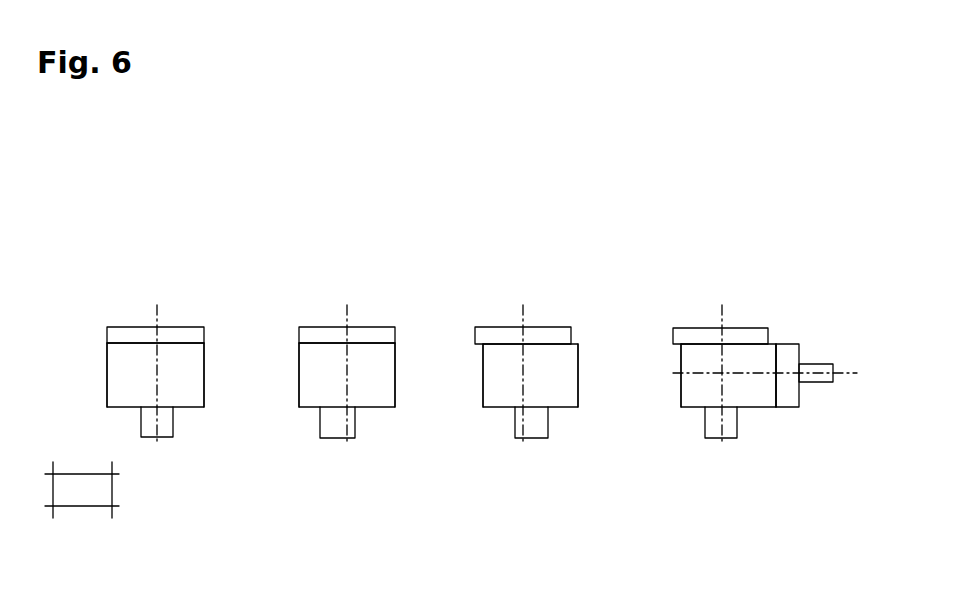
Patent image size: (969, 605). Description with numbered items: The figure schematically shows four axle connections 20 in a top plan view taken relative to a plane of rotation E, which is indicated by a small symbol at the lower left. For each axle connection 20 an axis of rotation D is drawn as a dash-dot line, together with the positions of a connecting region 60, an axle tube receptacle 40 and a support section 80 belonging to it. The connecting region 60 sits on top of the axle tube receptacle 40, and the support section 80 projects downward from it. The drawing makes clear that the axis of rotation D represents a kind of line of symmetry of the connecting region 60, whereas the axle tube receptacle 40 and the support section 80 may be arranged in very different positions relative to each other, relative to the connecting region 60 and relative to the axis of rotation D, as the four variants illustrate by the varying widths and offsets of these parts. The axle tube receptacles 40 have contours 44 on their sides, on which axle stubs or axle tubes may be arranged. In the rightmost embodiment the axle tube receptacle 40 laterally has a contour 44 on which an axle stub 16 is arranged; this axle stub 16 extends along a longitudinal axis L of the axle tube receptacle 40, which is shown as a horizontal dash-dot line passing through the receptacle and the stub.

The axle connection 20 is at (147, 275).
The axle tube receptacle 40 is at (195, 393).
The connecting region 60 is at (132, 337).
The support section 80 is at (165, 427).
The contour 44 is at (107, 362).
The axis of rotation D is at (163, 309).
The axle stub 16 is at (790, 358).
The longitudinal axis L is at (850, 372).
The plane of rotation E is at (73, 493).